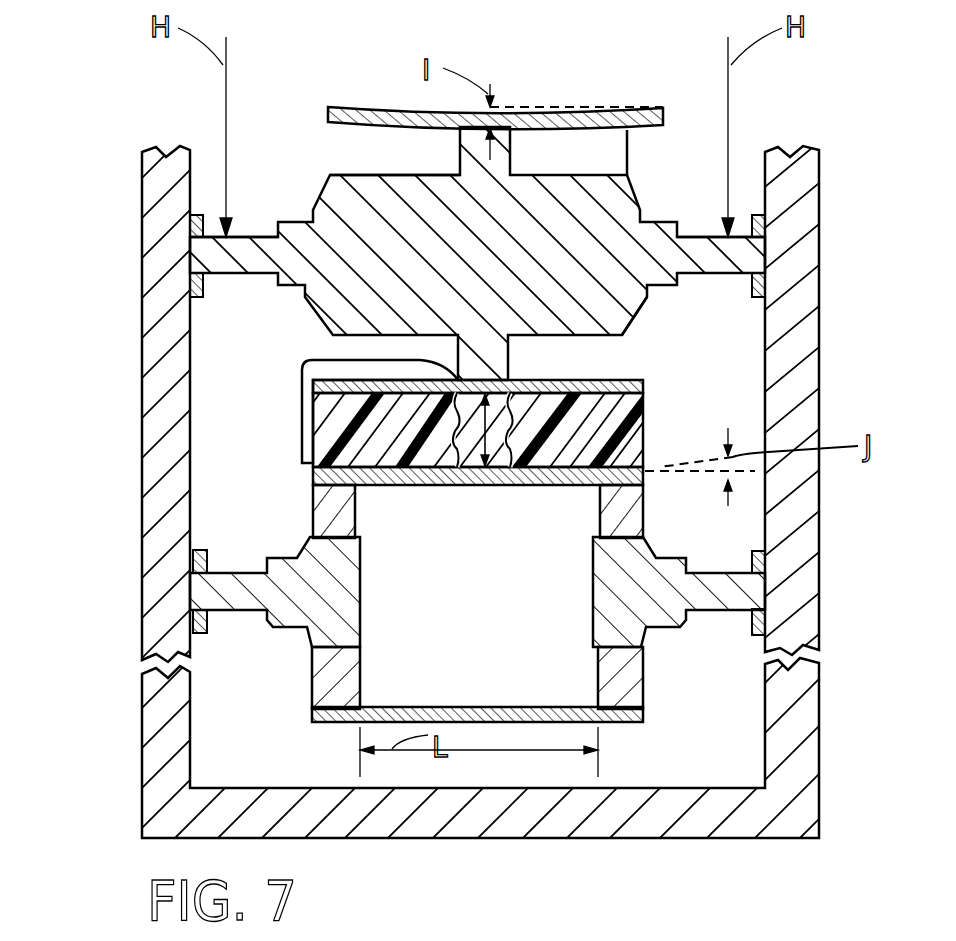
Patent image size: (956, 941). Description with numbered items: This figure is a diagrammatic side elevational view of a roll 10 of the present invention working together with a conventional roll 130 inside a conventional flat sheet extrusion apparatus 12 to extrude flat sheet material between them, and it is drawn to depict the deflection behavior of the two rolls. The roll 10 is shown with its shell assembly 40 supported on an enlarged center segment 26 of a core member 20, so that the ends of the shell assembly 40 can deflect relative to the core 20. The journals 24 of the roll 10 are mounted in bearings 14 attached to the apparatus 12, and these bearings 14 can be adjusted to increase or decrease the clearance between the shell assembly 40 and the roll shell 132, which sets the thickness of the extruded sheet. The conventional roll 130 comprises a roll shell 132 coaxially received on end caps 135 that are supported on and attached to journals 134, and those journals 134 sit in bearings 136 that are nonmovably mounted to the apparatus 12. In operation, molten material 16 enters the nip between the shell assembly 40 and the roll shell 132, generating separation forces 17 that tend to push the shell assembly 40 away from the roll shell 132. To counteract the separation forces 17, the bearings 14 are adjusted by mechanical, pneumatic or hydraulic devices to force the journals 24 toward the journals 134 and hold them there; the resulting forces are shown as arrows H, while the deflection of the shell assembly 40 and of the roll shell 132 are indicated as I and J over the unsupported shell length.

The roll 10 is at (645, 167).
The flat sheet extrusion apparatus 12 is at (130, 324).
The bearings 14 is at (207, 213).
The molten material 16 is at (647, 437).
The separation forces 17 is at (299, 372).
The core member 20 is at (618, 298).
The journals 24 is at (720, 237).
The enlarged center segment 26 is at (460, 148).
The shell assembly 40 is at (332, 105).
The conventional roll 130 is at (477, 621).
The roll shell 132 is at (478, 724).
The journals 134 is at (221, 570).
The end caps 135 is at (343, 675).
The bearings 136 is at (207, 638).